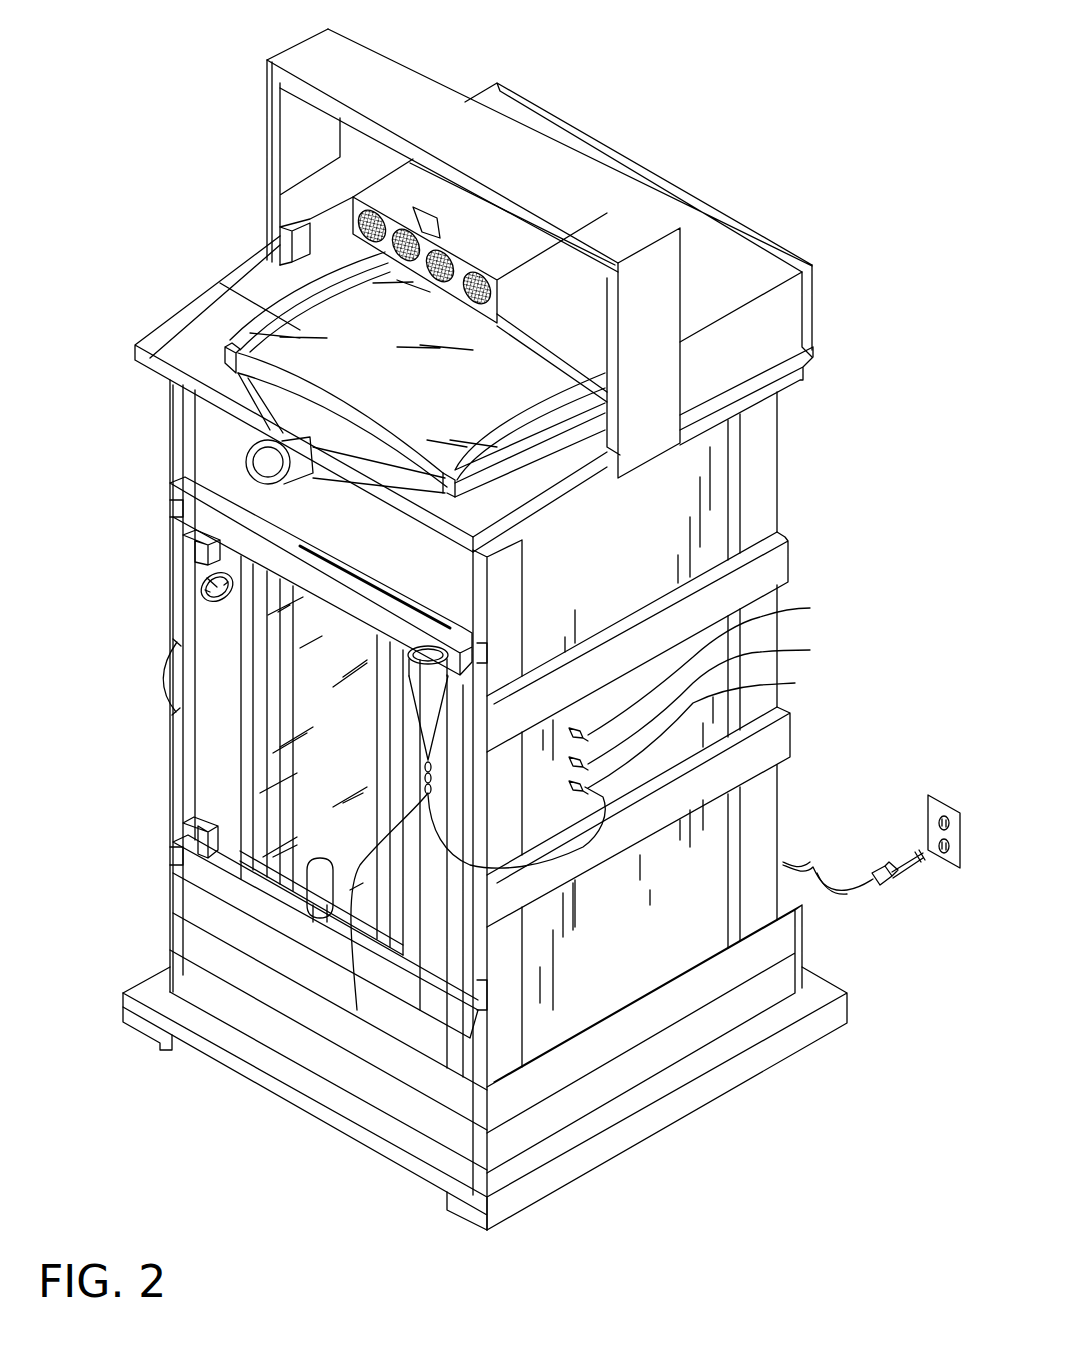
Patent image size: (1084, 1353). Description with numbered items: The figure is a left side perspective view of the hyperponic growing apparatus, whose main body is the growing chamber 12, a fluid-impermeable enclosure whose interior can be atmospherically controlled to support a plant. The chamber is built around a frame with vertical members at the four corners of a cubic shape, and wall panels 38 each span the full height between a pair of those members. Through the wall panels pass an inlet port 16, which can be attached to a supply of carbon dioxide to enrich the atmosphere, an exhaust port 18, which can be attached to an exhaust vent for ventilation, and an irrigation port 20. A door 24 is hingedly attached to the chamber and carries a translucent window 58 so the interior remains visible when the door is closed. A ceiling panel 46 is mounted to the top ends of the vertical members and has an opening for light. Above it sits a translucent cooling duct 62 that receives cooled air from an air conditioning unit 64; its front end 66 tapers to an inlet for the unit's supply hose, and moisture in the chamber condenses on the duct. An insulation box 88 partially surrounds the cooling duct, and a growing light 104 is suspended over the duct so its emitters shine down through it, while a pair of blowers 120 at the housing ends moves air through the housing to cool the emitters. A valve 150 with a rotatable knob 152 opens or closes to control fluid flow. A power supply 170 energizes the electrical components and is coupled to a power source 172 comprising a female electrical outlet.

The growing chamber 12 is at (872, 307).
The inlet port 16 is at (810, 608).
The exhaust port 18 is at (810, 650).
The irrigation port 20 is at (795, 683).
The door 24 is at (267, 580).
The wall panels 38 is at (680, 913).
The ceiling panel 46 is at (213, 317).
The window 58 is at (313, 750).
The cooling duct 62 is at (312, 318).
The air conditioning unit 64 is at (262, 478).
The front end 66 is at (273, 427).
The insulation box 88 is at (718, 247).
The growing light 104 is at (410, 197).
The blowers 120 is at (490, 300).
The valve 150 is at (428, 796).
The knob 152 is at (357, 1010).
The power supply 170 is at (880, 886).
The power source 172 is at (928, 797).